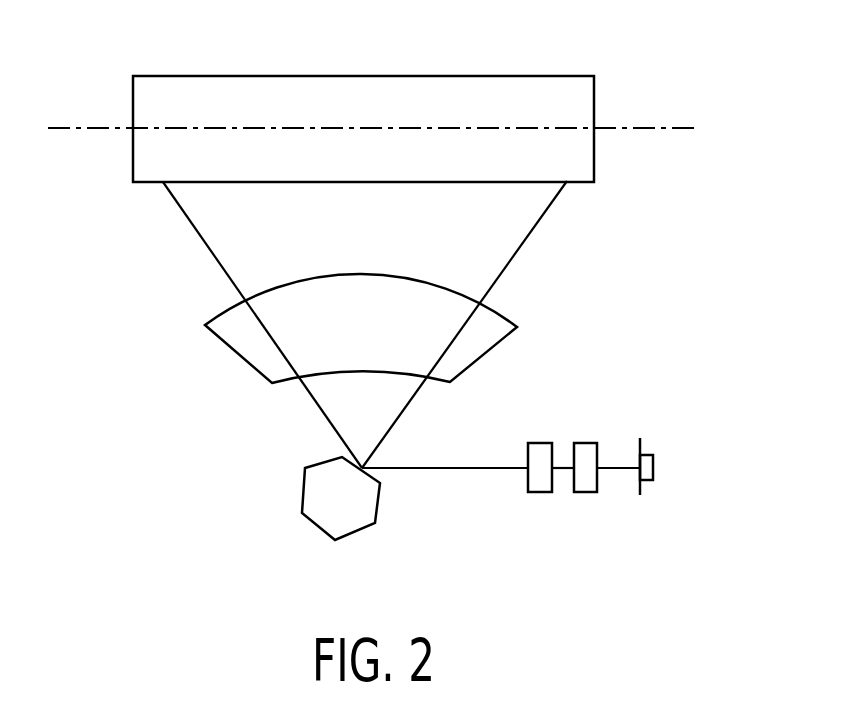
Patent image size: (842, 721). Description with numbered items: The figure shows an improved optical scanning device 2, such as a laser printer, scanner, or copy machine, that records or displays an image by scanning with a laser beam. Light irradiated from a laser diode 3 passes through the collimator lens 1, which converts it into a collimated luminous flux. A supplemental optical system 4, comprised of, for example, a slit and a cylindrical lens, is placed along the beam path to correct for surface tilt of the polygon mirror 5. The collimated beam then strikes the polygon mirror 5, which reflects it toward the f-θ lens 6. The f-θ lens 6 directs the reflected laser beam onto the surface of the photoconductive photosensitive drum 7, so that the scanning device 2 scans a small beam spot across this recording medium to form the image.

The collimator lens 1 is at (593, 492).
The optical scanning device 2 is at (145, 350).
The laser diode 3 is at (650, 482).
The supplemental optical system 4 is at (542, 492).
The polygon mirror 5 is at (358, 533).
The f-θ lens 6 is at (517, 325).
The photoconductive photosensitive drum 7 is at (493, 76).